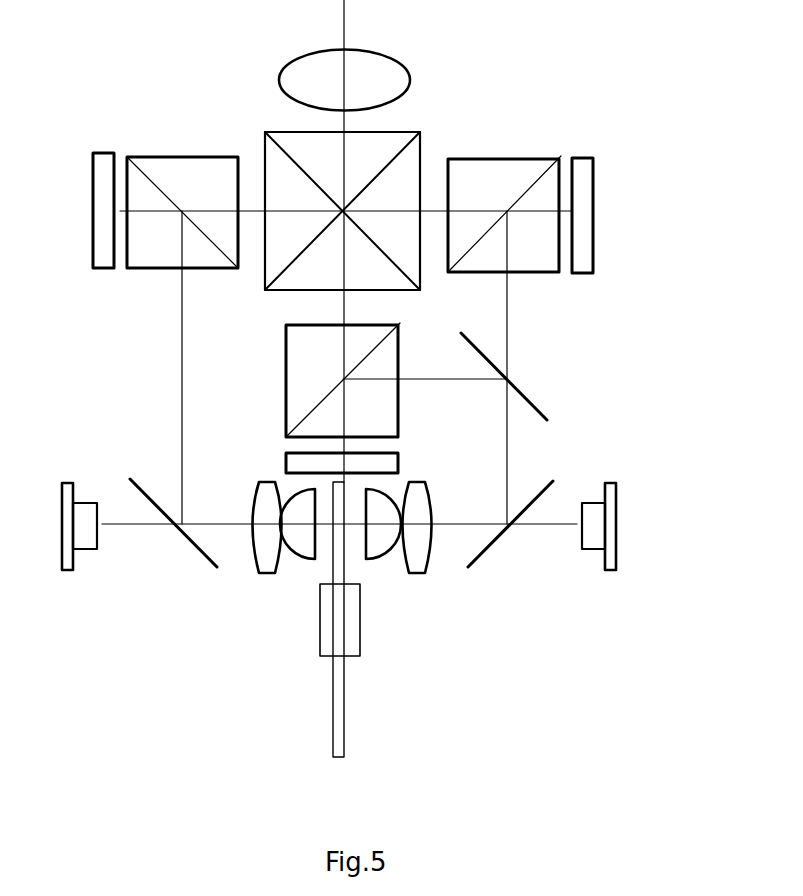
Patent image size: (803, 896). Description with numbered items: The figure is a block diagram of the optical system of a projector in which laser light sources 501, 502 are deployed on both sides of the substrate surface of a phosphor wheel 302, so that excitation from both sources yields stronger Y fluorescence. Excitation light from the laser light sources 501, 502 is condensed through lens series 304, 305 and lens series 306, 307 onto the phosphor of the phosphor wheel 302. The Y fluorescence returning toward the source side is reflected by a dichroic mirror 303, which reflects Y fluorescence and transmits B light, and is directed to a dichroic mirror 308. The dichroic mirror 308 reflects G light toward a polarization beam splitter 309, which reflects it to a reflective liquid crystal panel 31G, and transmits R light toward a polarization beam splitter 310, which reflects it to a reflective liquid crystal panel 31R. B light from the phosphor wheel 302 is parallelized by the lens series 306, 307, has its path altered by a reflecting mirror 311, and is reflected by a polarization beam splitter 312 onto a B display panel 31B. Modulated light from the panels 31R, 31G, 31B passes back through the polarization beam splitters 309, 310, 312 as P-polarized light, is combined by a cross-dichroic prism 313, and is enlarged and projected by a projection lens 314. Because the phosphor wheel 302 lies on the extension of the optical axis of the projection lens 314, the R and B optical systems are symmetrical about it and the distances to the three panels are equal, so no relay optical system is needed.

The phosphor wheel 302 is at (345, 703).
The dichroic mirror 303 is at (483, 552).
The lens series 304 is at (420, 573).
The lens series 305 is at (372, 557).
The lens series 306 is at (307, 557).
The lens series 307 is at (267, 573).
The dichroic mirror 308 is at (528, 400).
The polarization beam splitter 309 is at (390, 405).
The polarization beam splitter 310 is at (465, 166).
The reflecting mirror 311 is at (192, 545).
The polarization beam splitter 312 is at (165, 162).
The cross-dichroic prism 313 is at (390, 140).
The projection lens 314 is at (372, 60).
The reflective liquid crystal panel 31R is at (585, 160).
The reflective liquid crystal panel 31G is at (286, 462).
The reflective liquid crystal panel 31B is at (100, 262).
The laser light source 501 is at (610, 572).
The laser light source 502 is at (68, 572).